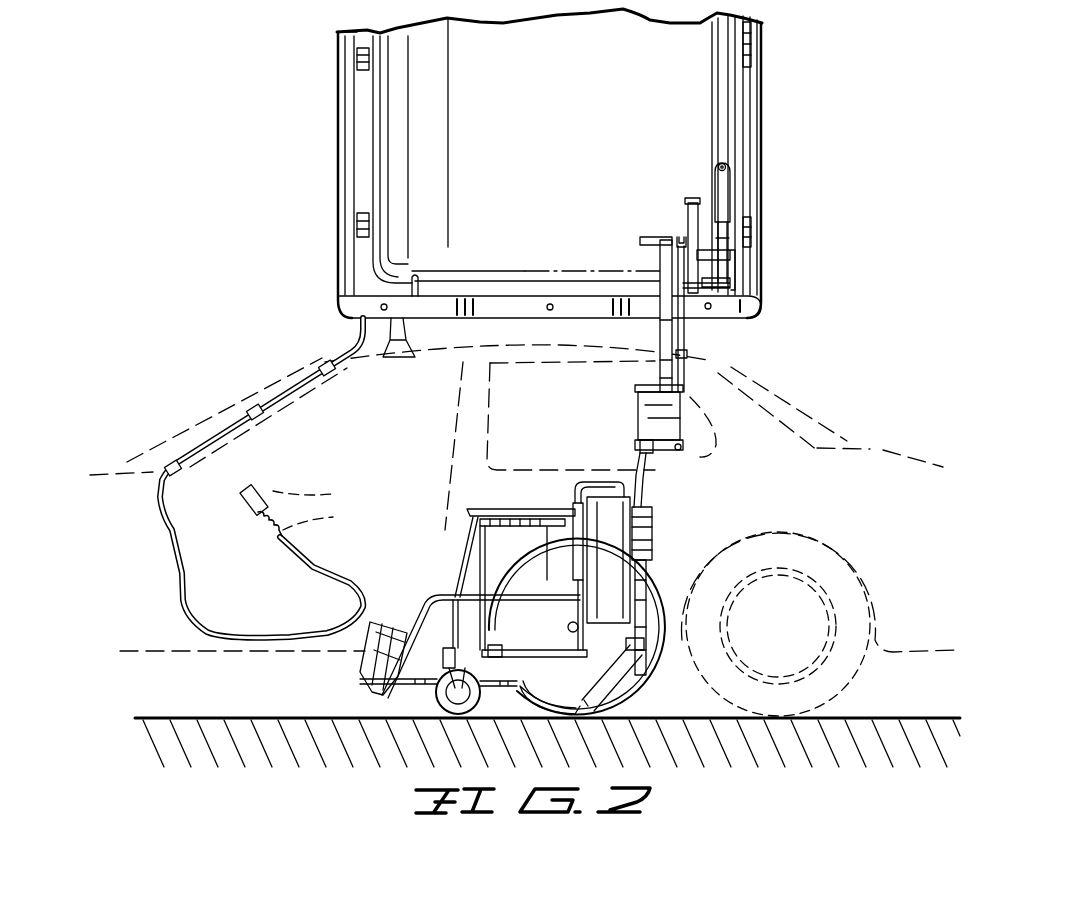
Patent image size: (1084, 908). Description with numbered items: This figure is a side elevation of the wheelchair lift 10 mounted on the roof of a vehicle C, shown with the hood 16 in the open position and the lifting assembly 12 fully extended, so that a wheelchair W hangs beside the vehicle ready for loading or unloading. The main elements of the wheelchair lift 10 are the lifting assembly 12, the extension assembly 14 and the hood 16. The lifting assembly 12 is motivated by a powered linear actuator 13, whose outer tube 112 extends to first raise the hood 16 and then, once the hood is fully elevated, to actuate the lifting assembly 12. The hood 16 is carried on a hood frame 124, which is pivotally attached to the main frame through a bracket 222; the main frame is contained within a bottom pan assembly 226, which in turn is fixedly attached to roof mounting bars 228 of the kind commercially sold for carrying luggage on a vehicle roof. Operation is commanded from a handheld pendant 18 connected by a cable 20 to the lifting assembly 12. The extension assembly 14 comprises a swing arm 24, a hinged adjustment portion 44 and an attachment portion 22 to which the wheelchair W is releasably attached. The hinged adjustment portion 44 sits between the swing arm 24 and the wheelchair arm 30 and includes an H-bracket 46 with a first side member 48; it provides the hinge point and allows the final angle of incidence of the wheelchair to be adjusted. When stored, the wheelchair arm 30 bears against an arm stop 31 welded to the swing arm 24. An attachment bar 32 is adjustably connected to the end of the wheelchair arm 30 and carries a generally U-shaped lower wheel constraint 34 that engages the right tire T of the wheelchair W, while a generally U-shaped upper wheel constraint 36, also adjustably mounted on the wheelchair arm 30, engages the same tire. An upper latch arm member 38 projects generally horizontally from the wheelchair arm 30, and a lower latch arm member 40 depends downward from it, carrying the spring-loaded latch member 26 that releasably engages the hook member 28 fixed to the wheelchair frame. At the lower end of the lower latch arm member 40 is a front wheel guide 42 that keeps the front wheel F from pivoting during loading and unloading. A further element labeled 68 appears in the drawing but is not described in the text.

The wheelchair lift 10 is at (823, 137).
The lifting assembly 12 is at (688, 196).
The powered linear actuator 13 is at (722, 158).
The extension assembly 14 is at (730, 408).
The hood 16 is at (556, 119).
The pendant 18 is at (247, 487).
The cable 20 is at (200, 440).
The attachment portion 22 is at (668, 628).
The swing arm 24 is at (658, 338).
The spring-loaded latch member 26 is at (496, 648).
The hook member 28 is at (428, 597).
The wheelchair arm 30 is at (655, 610).
The arm stop 31 is at (656, 236).
The attachment bar 32 is at (640, 690).
The lower wheel constraint 34 is at (577, 705).
The upper wheel constraint 36 is at (654, 547).
The upper latch arm member 38 is at (541, 510).
The lower latch arm member 40 is at (454, 582).
The front wheel guide 42 is at (377, 697).
The hinged adjustment portion 44 is at (636, 426).
The H-bracket 46 is at (638, 404).
The first side member 48 is at (685, 453).
The mounting bracket under bed 68 is at (700, 313).
The outer tube 112 is at (722, 196).
The hood frame 124 is at (345, 100).
The bracket 222 is at (423, 280).
The bottom pan assembly 226 is at (530, 298).
The roof mounting bars 228 is at (362, 327).
The vehicle C is at (842, 437).
The right tire T is at (668, 650).
The wheelchair W is at (367, 660).
The front wheel F is at (440, 709).